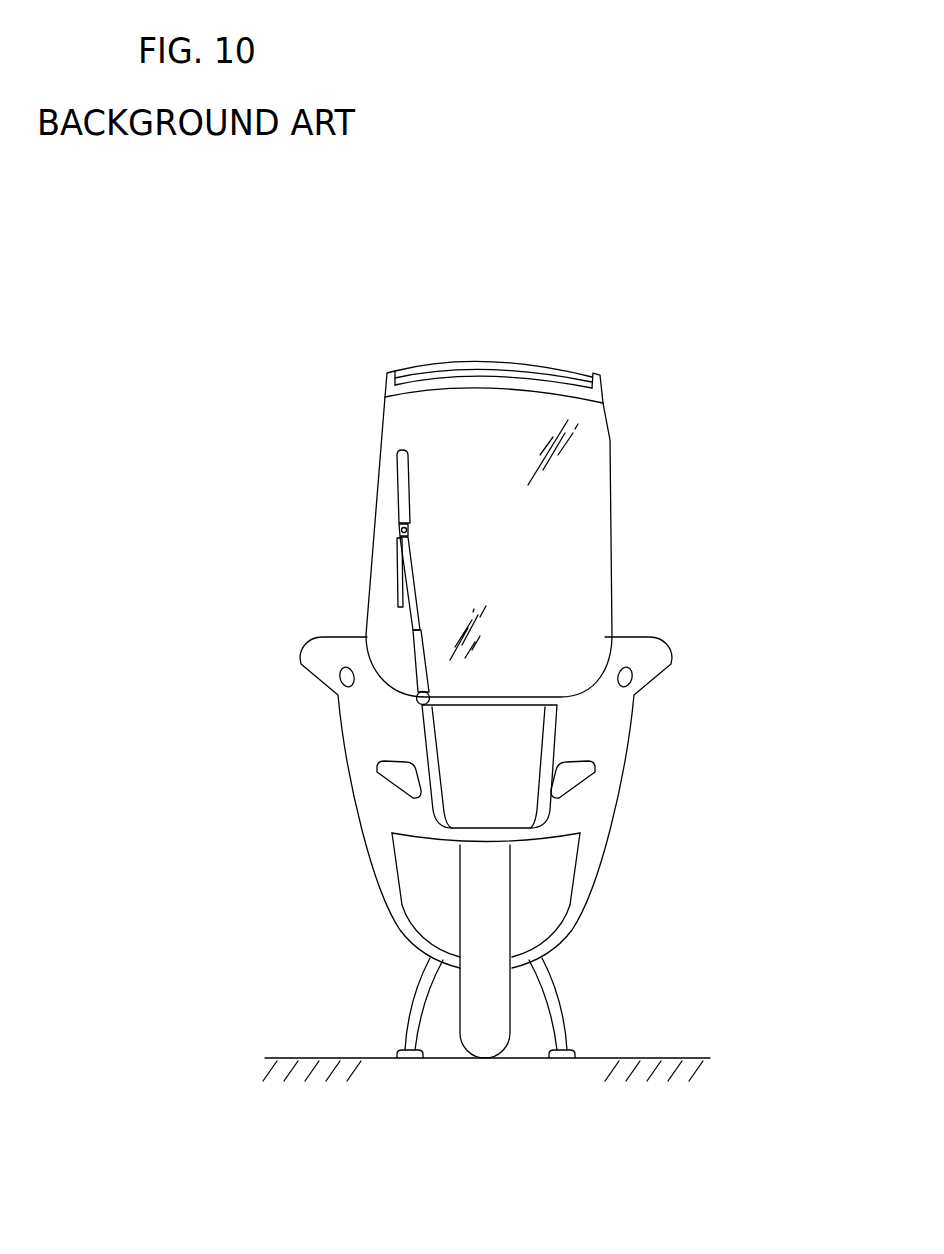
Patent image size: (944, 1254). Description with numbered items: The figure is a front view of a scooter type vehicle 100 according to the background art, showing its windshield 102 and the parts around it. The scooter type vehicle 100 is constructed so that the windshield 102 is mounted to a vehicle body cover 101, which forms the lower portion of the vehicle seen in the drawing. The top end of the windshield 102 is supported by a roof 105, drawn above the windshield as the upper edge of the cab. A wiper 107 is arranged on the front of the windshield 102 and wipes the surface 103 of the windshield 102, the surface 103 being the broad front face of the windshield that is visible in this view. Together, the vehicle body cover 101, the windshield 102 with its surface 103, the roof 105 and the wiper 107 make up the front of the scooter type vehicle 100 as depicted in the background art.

The scooter type vehicle 100 is at (660, 395).
The vehicle body cover 101 is at (610, 735).
The windshield 102 is at (608, 568).
The surface 103 is at (570, 513).
The roof 105 is at (507, 361).
The wiper 107 is at (402, 483).